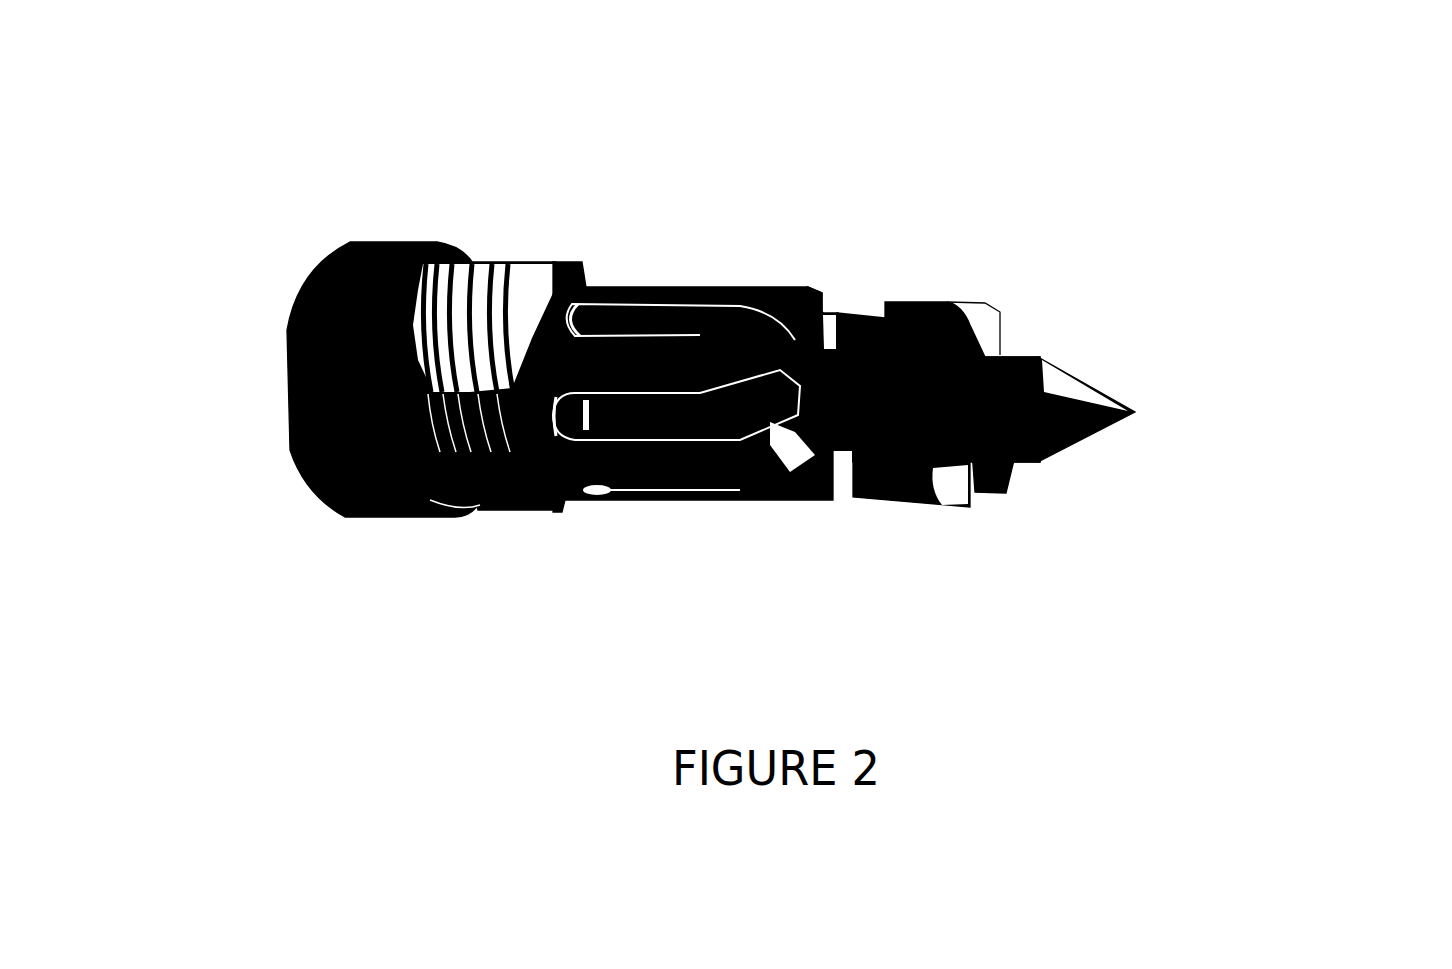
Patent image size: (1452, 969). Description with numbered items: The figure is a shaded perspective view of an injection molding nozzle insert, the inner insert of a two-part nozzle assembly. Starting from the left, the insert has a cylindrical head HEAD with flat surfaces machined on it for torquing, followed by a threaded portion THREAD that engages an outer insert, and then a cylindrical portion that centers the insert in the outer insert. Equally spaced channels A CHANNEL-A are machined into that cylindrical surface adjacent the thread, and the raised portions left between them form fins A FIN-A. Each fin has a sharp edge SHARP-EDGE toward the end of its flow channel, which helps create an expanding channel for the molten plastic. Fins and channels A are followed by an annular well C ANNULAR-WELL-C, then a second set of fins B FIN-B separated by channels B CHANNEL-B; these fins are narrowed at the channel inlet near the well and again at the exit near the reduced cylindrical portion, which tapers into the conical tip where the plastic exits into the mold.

The cylindrical head HEAD is at (400, 240).
The threaded portion THREAD is at (500, 258).
The fins A FIN-A is at (648, 292).
The channels A CHANNEL-A is at (757, 315).
The sharp edge SHARP-EDGE is at (820, 312).
The fins B FIN-B is at (987, 305).
The channels B CHANNEL-B is at (980, 338).
The annular well C ANNULAR-WELL-C is at (768, 490).